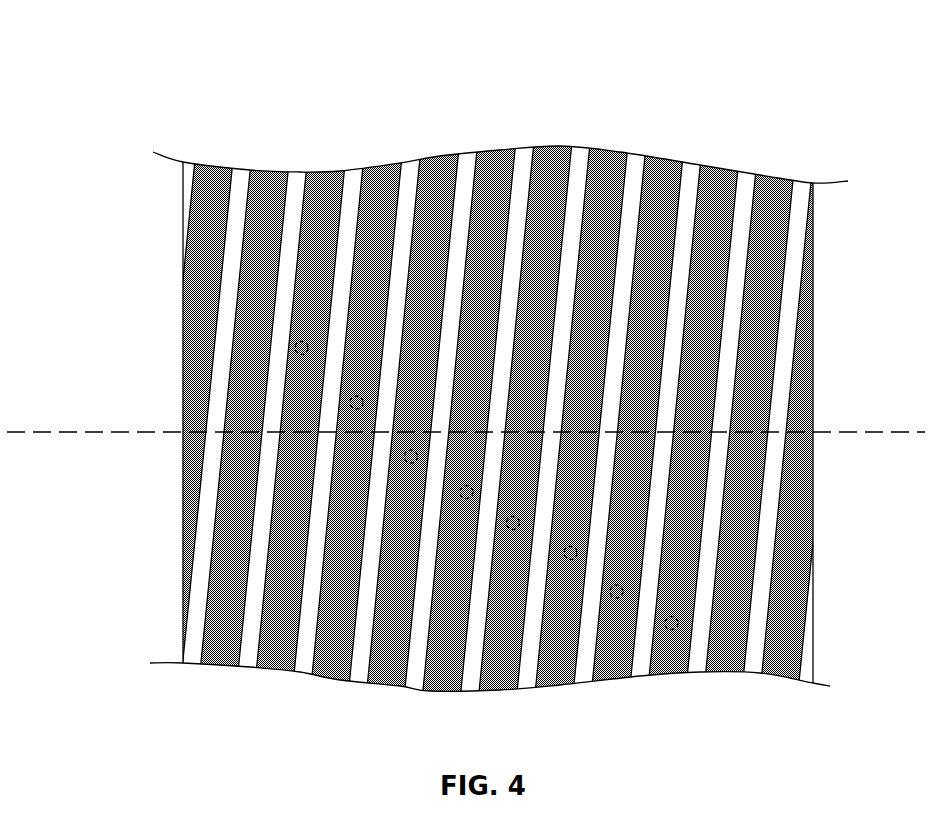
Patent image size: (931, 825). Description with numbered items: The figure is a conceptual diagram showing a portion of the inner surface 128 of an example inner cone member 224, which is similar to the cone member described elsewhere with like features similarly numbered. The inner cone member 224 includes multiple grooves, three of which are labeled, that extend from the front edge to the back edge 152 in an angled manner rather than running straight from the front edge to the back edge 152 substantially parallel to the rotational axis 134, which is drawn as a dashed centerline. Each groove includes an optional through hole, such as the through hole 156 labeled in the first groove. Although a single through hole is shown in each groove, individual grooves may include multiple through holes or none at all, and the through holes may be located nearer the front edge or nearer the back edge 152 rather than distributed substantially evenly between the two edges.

The inner cone member 224 is at (466, 395).
The inner surface 128 is at (523, 431).
The back edge 152 is at (818, 303).
The rotational axis 134 is at (25, 433).
The through hole 156 is at (507, 520).